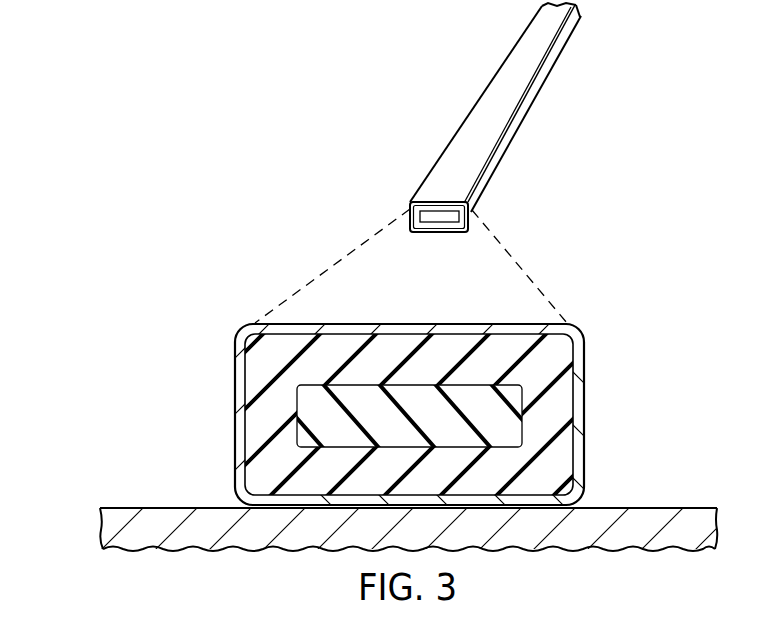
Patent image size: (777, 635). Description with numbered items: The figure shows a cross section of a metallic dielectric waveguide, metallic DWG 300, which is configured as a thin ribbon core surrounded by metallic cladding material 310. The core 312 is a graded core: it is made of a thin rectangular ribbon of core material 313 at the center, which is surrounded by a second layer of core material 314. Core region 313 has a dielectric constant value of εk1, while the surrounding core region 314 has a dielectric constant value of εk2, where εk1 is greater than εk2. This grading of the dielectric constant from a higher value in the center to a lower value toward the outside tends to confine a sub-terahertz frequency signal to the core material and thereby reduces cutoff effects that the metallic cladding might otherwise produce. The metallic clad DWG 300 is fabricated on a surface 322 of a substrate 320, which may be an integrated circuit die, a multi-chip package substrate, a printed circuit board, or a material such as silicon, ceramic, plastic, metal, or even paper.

The metallic DWG 300 is at (487, 106).
The metallic cladding material 310 is at (409, 385).
The core 312 is at (453, 337).
The core material 313 is at (305, 395).
The second layer of core material 314 is at (405, 348).
The substrate 320 is at (408, 505).
The surface 322 is at (647, 508).